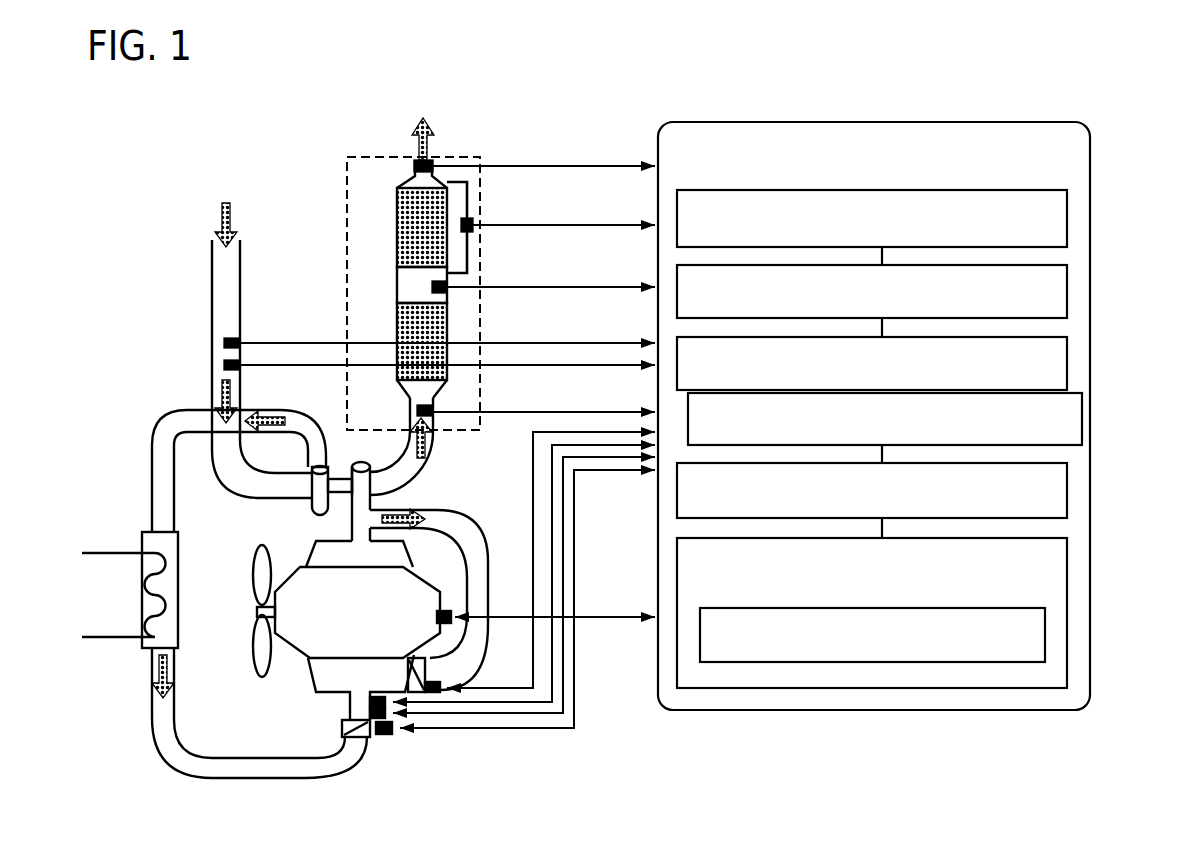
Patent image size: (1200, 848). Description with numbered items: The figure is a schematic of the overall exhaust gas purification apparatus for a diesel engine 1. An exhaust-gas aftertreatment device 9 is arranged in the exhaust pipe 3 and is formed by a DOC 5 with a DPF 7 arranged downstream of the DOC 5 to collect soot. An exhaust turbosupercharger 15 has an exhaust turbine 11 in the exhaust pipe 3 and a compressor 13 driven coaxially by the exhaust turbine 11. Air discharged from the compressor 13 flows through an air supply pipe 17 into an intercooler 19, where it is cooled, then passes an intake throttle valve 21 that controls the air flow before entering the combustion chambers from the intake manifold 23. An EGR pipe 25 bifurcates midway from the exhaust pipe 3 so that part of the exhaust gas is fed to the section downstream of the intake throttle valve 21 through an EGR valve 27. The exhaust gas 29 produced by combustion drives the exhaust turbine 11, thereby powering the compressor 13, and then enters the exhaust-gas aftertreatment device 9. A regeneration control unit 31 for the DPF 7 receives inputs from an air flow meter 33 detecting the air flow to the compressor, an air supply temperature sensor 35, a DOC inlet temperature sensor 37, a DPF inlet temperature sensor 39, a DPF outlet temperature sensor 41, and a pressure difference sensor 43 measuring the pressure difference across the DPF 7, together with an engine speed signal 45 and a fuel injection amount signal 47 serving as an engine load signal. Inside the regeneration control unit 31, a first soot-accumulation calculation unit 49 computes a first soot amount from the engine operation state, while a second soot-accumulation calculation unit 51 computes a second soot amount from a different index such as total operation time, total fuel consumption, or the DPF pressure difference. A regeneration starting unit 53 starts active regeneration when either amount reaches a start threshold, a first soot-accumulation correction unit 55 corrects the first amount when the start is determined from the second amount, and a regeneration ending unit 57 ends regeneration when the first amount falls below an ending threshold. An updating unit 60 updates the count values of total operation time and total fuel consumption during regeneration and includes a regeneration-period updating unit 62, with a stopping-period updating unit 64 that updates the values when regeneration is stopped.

The diesel engine 1 is at (286, 660).
The exhaust pipe 3 is at (428, 477).
The DOC (diesel oxidation catalyst) 5 is at (397, 320).
The DPF (diesel particulate filter) 7 is at (397, 240).
The exhaust-gas aftertreatment device 9 is at (346, 178).
The exhaust turbine 11 is at (372, 469).
The compressor 13 is at (322, 466).
The exhaust turbosupercharger 15 is at (340, 499).
The air supply pipe 17 is at (152, 448).
The intercooler 19 is at (178, 578).
The intake throttle valve 21 is at (372, 740).
The intake manifold 23 is at (323, 693).
The EGR pipe 25 is at (470, 517).
The EGR valve 27 is at (452, 660).
The exhaust gas 29 is at (433, 445).
The regeneration control unit 31 is at (1090, 160).
The air flow meter 33 is at (240, 366).
The air supply temperature sensor 35 is at (240, 343).
The DOC inlet temperature sensor 37 is at (433, 407).
The DPF inlet temperature sensor 39 is at (447, 293).
The DPF outlet temperature sensor 41 is at (433, 160).
The pressure difference sensor 43 is at (473, 230).
The engine speed signal 45 is at (546, 694).
The fuel injection amount signal (engine load signal) 47 is at (612, 620).
The first soot-accumulation calculation unit 49 is at (1067, 362).
The second soot-accumulation calculation unit 51 is at (1067, 488).
The regeneration starting unit 53 is at (1067, 215).
The first soot-accumulation correction unit 55 is at (1082, 415).
The regeneration ending unit 57 is at (1067, 287).
The updating unit 60 is at (1067, 572).
The regeneration-period updating unit 62 is at (949, 635).
The stopping-period updating unit 64 is at (1045, 635).